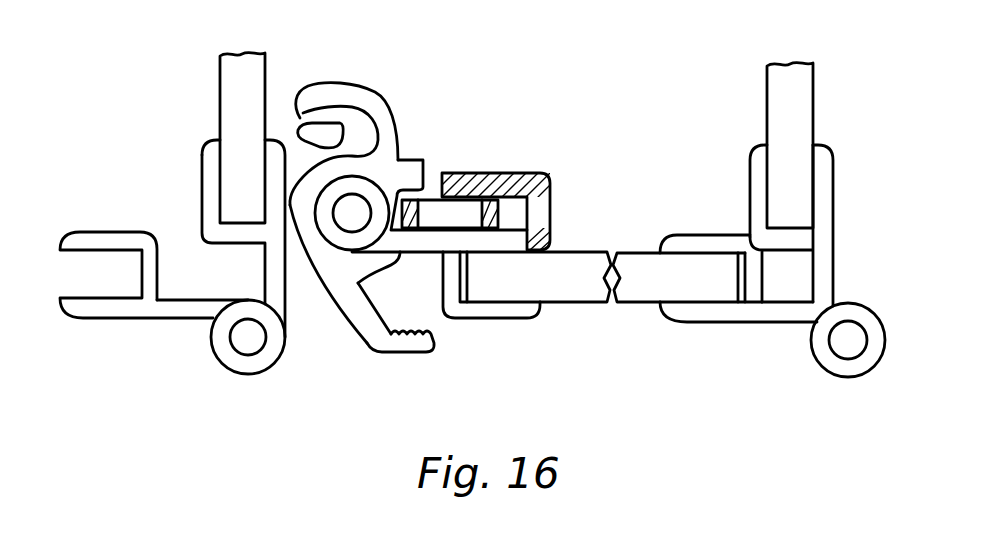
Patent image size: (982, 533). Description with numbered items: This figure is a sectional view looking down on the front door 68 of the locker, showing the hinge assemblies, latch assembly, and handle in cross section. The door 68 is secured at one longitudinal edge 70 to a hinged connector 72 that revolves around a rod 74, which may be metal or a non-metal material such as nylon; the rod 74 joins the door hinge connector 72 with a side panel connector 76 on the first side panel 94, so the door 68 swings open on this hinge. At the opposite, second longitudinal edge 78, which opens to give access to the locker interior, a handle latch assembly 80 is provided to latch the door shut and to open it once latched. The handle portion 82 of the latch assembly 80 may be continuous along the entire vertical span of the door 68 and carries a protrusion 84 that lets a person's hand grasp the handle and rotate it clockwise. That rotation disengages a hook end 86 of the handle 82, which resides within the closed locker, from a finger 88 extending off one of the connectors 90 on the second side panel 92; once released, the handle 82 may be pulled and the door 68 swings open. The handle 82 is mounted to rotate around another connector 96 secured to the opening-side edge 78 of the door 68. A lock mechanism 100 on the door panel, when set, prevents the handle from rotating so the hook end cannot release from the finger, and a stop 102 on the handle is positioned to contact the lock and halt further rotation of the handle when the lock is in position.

The front door 68 is at (577, 303).
The longitudinal edge 70 is at (737, 272).
The hinged connector 72 is at (750, 290).
The rod 74 is at (846, 348).
The side panel connector 76 is at (833, 218).
The second longitudinal edge 78 is at (468, 278).
The handle latch assembly 80 is at (403, 372).
The handle portion 82 is at (367, 342).
The protrusion 84 is at (433, 340).
The hook end 86 is at (363, 88).
The finger 88 is at (289, 122).
The connector 90 is at (202, 176).
The second side panel 92 is at (220, 92).
The first side panel 94 is at (815, 112).
The connector 96 is at (423, 253).
The lock mechanism 100 is at (510, 165).
The stop 102 is at (425, 160).